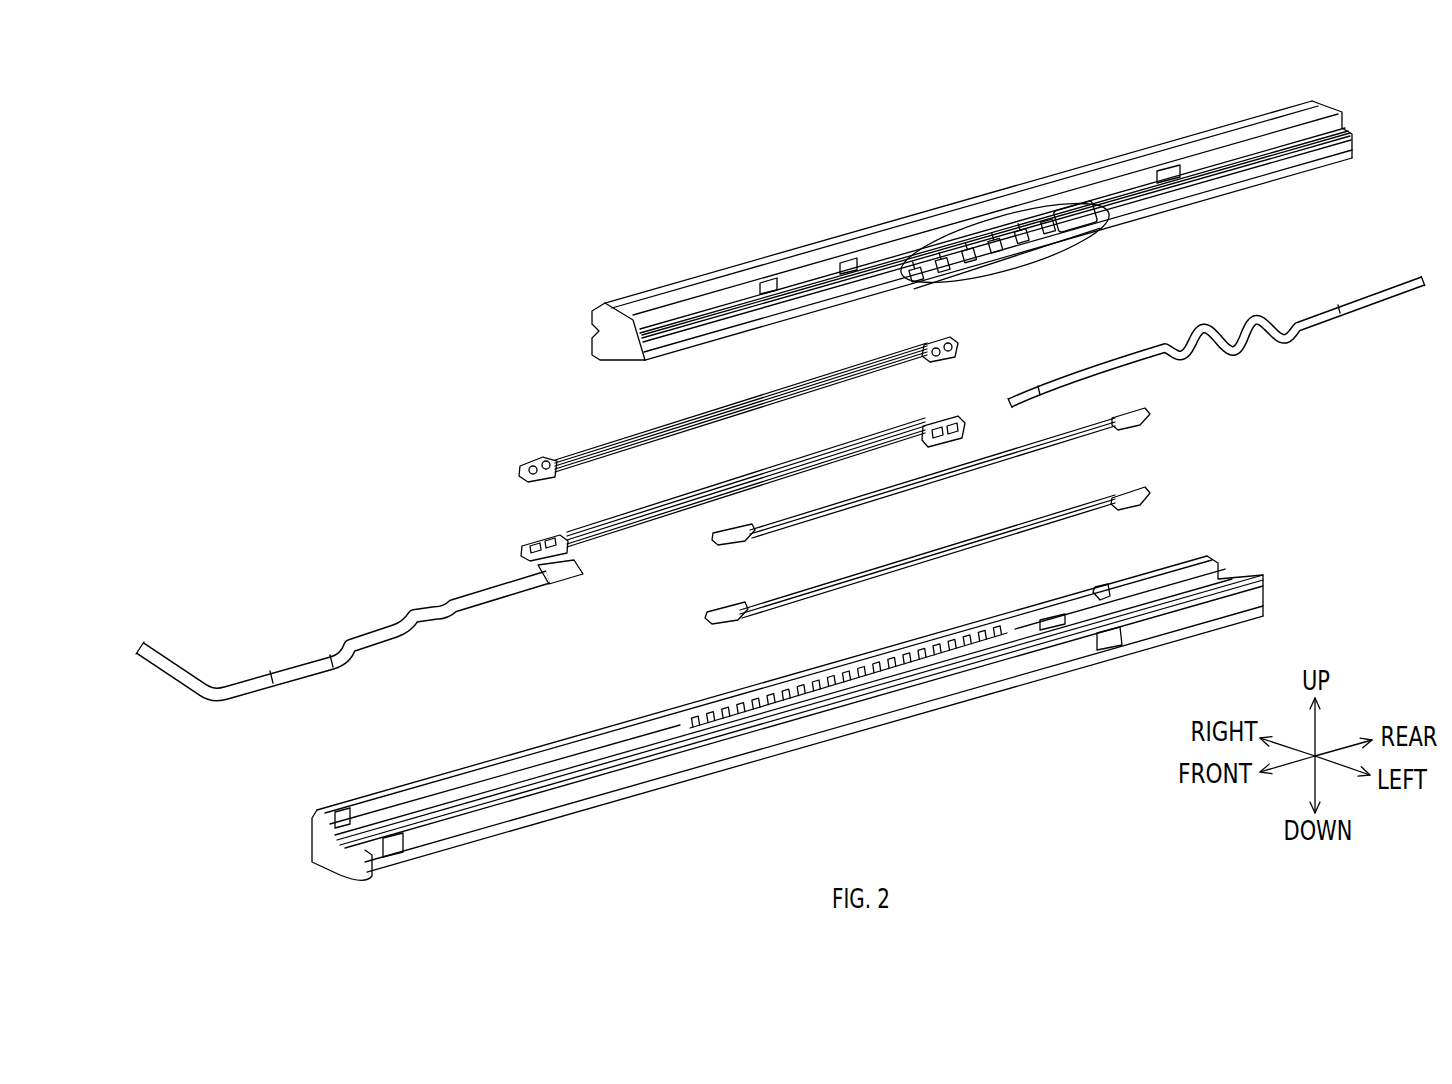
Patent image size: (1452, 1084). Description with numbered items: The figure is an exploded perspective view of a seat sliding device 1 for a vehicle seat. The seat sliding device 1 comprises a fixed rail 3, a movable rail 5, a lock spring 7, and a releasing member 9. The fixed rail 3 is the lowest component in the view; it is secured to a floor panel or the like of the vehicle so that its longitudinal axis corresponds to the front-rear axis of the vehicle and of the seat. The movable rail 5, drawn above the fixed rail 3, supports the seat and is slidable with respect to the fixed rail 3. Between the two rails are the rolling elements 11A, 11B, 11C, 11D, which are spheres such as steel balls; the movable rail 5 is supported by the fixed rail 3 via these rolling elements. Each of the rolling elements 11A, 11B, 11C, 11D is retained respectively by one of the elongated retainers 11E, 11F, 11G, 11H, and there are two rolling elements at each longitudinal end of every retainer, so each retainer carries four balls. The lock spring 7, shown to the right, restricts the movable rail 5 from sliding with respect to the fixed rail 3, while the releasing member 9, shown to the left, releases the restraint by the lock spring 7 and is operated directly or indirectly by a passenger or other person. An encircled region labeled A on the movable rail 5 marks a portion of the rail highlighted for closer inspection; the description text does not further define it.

The seat sliding device 1 is at (378, 305).
The fixed rail 3 is at (810, 748).
The movable rail 5 is at (968, 200).
The lock spring 7 is at (1230, 312).
The releasing member 9 is at (367, 608).
The rolling element 11A is at (732, 620).
The rolling element 11B is at (545, 540).
The rolling element 11C is at (733, 542).
The rolling element 11D is at (540, 465).
The retainer 11E is at (930, 565).
The retainer 11F is at (645, 530).
The retainer 11G is at (933, 483).
The retainer 11H is at (628, 425).
The connector portion A is at (1017, 270).